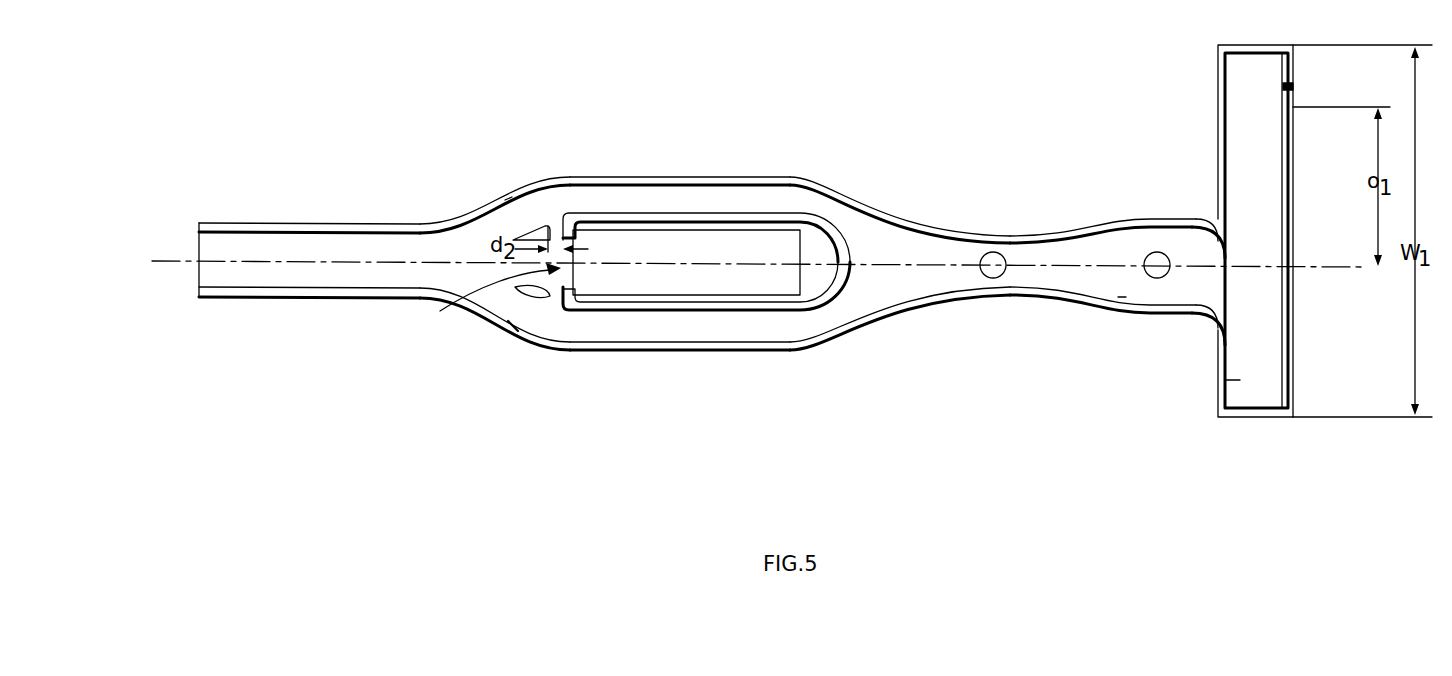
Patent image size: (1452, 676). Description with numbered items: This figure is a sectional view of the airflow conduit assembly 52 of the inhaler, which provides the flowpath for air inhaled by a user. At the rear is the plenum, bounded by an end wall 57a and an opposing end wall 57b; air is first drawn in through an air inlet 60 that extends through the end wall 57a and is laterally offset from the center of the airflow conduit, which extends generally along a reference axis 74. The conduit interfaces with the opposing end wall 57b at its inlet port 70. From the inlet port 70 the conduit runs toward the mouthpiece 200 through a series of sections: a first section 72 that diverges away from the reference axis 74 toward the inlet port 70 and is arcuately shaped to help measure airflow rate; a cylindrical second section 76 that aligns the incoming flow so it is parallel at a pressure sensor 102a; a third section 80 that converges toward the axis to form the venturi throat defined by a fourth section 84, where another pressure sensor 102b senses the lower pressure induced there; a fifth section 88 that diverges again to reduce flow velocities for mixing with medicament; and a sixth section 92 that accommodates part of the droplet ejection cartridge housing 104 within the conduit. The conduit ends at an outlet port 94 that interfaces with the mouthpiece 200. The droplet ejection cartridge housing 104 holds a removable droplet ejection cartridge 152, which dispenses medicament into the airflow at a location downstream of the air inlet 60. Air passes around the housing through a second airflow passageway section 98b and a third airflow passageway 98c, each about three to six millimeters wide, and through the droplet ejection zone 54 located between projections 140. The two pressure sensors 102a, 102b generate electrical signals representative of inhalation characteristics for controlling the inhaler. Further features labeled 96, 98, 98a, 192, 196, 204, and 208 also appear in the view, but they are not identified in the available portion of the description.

The airflow conduit assembly 52 is at (833, 148).
The droplet ejection zone 54 is at (485, 299).
The end wall 57a is at (1293, 322).
The opposing end wall 57b is at (1225, 378).
The air inlet 60 is at (1293, 90).
The inlet port 70 is at (1225, 213).
The first section 72 is at (1200, 214).
The reference axis 74 is at (155, 260).
The second section 76 is at (1163, 317).
The third section 80 is at (1073, 230).
The fourth section 84 is at (993, 297).
The fifth section 88 is at (908, 225).
The sixth section 92 is at (710, 178).
The outlet port 94 is at (515, 328).
The upper transition wall 96 is at (530, 190).
The lumen 98 is at (873, 283).
The proximal lumen portion 98a is at (1122, 295).
The second airflow passageway section 98b is at (722, 200).
The third airflow passageway 98c is at (720, 330).
The pressure sensor 102a is at (1148, 256).
The pressure sensor 102b is at (995, 253).
The droplet ejection cartridge housing 104 is at (622, 308).
The projections 140 is at (563, 236).
The droplet ejection cartridge 152 is at (684, 258).
The upper strut 192 is at (520, 228).
The lower strut 196 is at (512, 296).
The mouthpiece 200 is at (270, 222).
The transition region 204 is at (512, 200).
The distal opening 208 is at (198, 275).